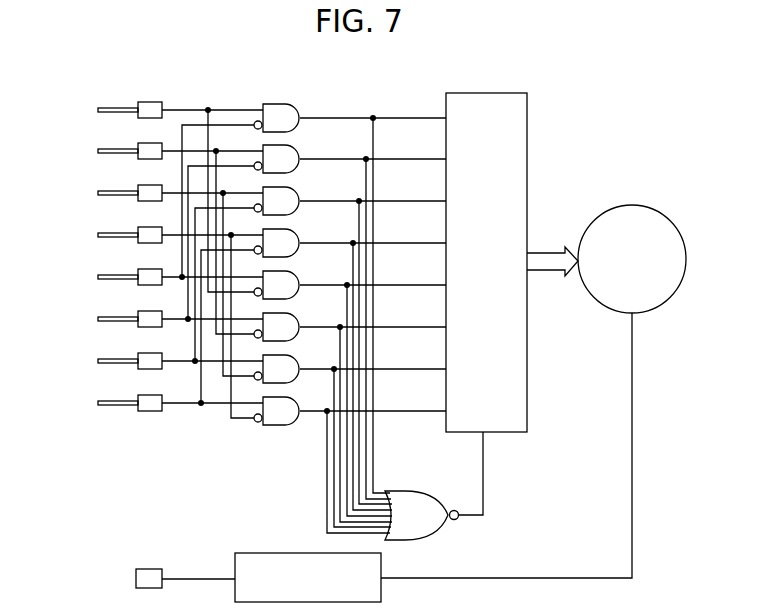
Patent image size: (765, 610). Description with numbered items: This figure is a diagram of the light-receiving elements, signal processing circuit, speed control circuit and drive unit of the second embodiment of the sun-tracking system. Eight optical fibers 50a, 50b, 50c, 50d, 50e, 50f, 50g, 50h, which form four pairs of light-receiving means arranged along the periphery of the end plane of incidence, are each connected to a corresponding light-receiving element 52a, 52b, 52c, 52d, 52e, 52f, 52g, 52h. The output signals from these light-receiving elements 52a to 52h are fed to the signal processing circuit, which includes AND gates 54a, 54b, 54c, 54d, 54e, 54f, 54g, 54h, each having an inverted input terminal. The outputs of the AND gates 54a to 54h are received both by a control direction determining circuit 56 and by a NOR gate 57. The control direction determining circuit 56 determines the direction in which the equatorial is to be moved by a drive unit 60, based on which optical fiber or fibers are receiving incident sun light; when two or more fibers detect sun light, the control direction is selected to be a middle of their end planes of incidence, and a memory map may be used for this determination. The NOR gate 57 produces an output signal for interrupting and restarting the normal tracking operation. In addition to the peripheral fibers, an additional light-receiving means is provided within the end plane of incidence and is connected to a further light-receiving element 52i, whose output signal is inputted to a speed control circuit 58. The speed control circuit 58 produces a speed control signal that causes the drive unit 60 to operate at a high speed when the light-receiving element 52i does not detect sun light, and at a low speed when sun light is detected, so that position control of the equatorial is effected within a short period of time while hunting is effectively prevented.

The optical fiber 50a is at (99, 108).
The optical fiber 50b is at (99, 151).
The optical fiber 50c is at (99, 193).
The optical fiber 50d is at (99, 235).
The optical fiber 50e is at (99, 277).
The optical fiber 50f is at (99, 319).
The optical fiber 50g is at (99, 361).
The optical fiber 50h is at (99, 404).
The light-receiving element 52a is at (147, 102).
The light-receiving element 52b is at (147, 143).
The light-receiving element 52c is at (147, 185).
The light-receiving element 52d is at (147, 227).
The light-receiving element 52e is at (147, 269).
The light-receiving element 52f is at (147, 311).
The light-receiving element 52g is at (147, 353).
The light-receiving element 52h is at (147, 395).
The light-receiving element 52i is at (152, 569).
The AND gate 54a is at (287, 104).
The AND gate 54b is at (292, 146).
The AND gate 54c is at (293, 188).
The AND gate 54d is at (294, 230).
The AND gate 54e is at (294, 272).
The AND gate 54f is at (292, 314).
The AND gate 54g is at (292, 356).
The AND gate 54h is at (286, 425).
The control direction determining circuit 56 is at (528, 146).
The NOR gate 57 is at (412, 491).
The speed control circuit 58 is at (283, 553).
The drive unit 60 is at (634, 205).